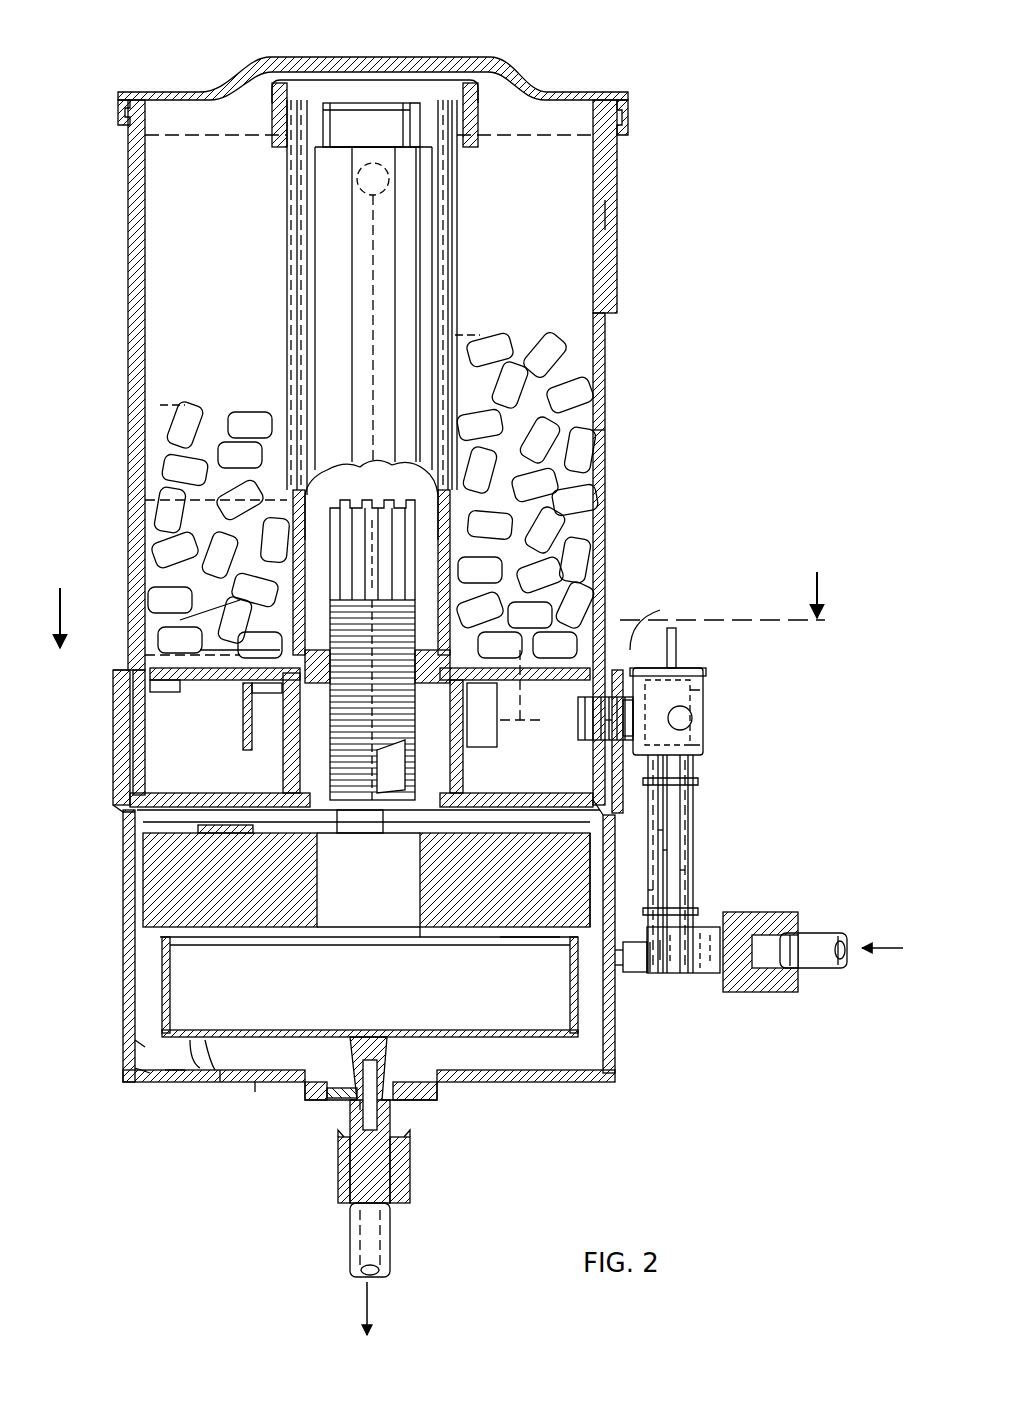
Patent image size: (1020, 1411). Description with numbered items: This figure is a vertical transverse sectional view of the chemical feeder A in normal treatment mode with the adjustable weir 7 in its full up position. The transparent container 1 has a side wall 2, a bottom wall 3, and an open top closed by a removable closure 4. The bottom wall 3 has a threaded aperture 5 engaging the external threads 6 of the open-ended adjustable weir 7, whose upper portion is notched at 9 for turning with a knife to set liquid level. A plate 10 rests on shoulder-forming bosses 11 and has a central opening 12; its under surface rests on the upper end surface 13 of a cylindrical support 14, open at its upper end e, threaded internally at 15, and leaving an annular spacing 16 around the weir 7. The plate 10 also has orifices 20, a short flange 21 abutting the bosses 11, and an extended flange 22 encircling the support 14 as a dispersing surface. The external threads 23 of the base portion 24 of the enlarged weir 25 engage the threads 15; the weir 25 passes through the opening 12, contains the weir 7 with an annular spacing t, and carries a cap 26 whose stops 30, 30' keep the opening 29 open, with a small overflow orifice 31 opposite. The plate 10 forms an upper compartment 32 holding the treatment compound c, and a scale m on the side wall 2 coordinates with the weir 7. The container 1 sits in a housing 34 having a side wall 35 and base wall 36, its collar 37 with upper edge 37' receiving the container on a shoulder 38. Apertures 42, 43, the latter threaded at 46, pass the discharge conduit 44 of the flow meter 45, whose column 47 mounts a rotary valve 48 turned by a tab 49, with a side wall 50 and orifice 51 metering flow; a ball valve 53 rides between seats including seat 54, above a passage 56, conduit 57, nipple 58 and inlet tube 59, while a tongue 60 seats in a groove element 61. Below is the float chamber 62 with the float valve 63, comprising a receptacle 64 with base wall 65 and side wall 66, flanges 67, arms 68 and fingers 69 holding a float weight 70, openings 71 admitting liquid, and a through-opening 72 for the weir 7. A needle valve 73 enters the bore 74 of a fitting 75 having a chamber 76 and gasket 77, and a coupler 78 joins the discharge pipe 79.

The container 1 is at (615, 228).
The side wall 2 is at (605, 348).
The bottom wall 3 is at (135, 818).
The removable closure 4 is at (577, 93).
The threaded aperture 5 is at (530, 930).
The external threads 6 is at (560, 915).
The adjustable weir 7 is at (455, 512).
The circumferential notch 9 is at (605, 438).
The plate 10 is at (600, 620).
The shoulder-forming bosses 11 is at (240, 702).
The circular opening 12 is at (570, 560).
The upper end surface 13 is at (172, 690).
The cylindrical support 14 is at (290, 762).
The internal threads 15 is at (283, 742).
The annular spacing 16 is at (300, 782).
The orifices 20 is at (575, 595).
The short continuous flange 21 is at (152, 680).
The extended flange 22 is at (283, 722).
The external threads 23 is at (300, 640).
The base portion 24 is at (200, 860).
The enlarged weir 25 is at (605, 362).
The cap 26 is at (428, 105).
The opening 29 is at (345, 148).
The stop 30 is at (332, 85).
The stop 30' is at (455, 76).
The overflow orifice 31 is at (358, 190).
The upper compartment 32 is at (605, 378).
The housing 34 is at (135, 1073).
The annular side wall 35 is at (130, 1047).
The base wall 36 is at (172, 1073).
The collar 37 is at (91, 730).
The upper end edge 37' is at (74, 623).
The shallow shoulder 38 is at (120, 806).
The aperture 42 is at (633, 740).
The aperture 43 is at (612, 755).
The discharge conduit 44 is at (632, 612).
The flow meter 45 is at (693, 800).
The internal threads 46 is at (610, 745).
The tubular column 47 is at (688, 832).
The rotary flow control valve 48 is at (700, 708).
The finger grippable tab 49 is at (678, 642).
The cylindrical side wall 50 is at (700, 705).
The orifice 51 is at (705, 724).
The ball valve 53 is at (663, 973).
The valve seat 54 is at (655, 973).
The passage 56 is at (672, 973).
The conduit 57 is at (680, 973).
The coupling or nipple 58 is at (770, 992).
The inlet tube 59 is at (830, 968).
The projecting tongue 60 is at (645, 973).
The groove-forming element 61 is at (625, 973).
The float chamber 62 is at (192, 1068).
The float valve 63 is at (162, 1030).
The receptacle 64 is at (208, 1072).
The base wall 65 is at (220, 1077).
The annular side wall 66 is at (165, 990).
The flanges 67 is at (658, 888).
The upstanding arms 68 is at (667, 870).
The hold-down fingers 69 is at (680, 852).
The float weight 70 is at (200, 835).
The openings 71 is at (505, 940).
The through-opening 72 is at (330, 835).
The needle valve 73 is at (255, 1088).
The bore 74 is at (350, 1127).
The fitting 75 is at (353, 1163).
The shallow chamber 76 is at (313, 1102).
The gasket 77 is at (333, 1110).
The coupler 78 is at (340, 1172).
The discharge pipe 79 is at (340, 1225).
The chemical feeder A is at (620, 208).
The treatment compound c is at (605, 395).
The open upper end e is at (290, 655).
The scale m is at (285, 670).
The annular spacing t is at (335, 770).